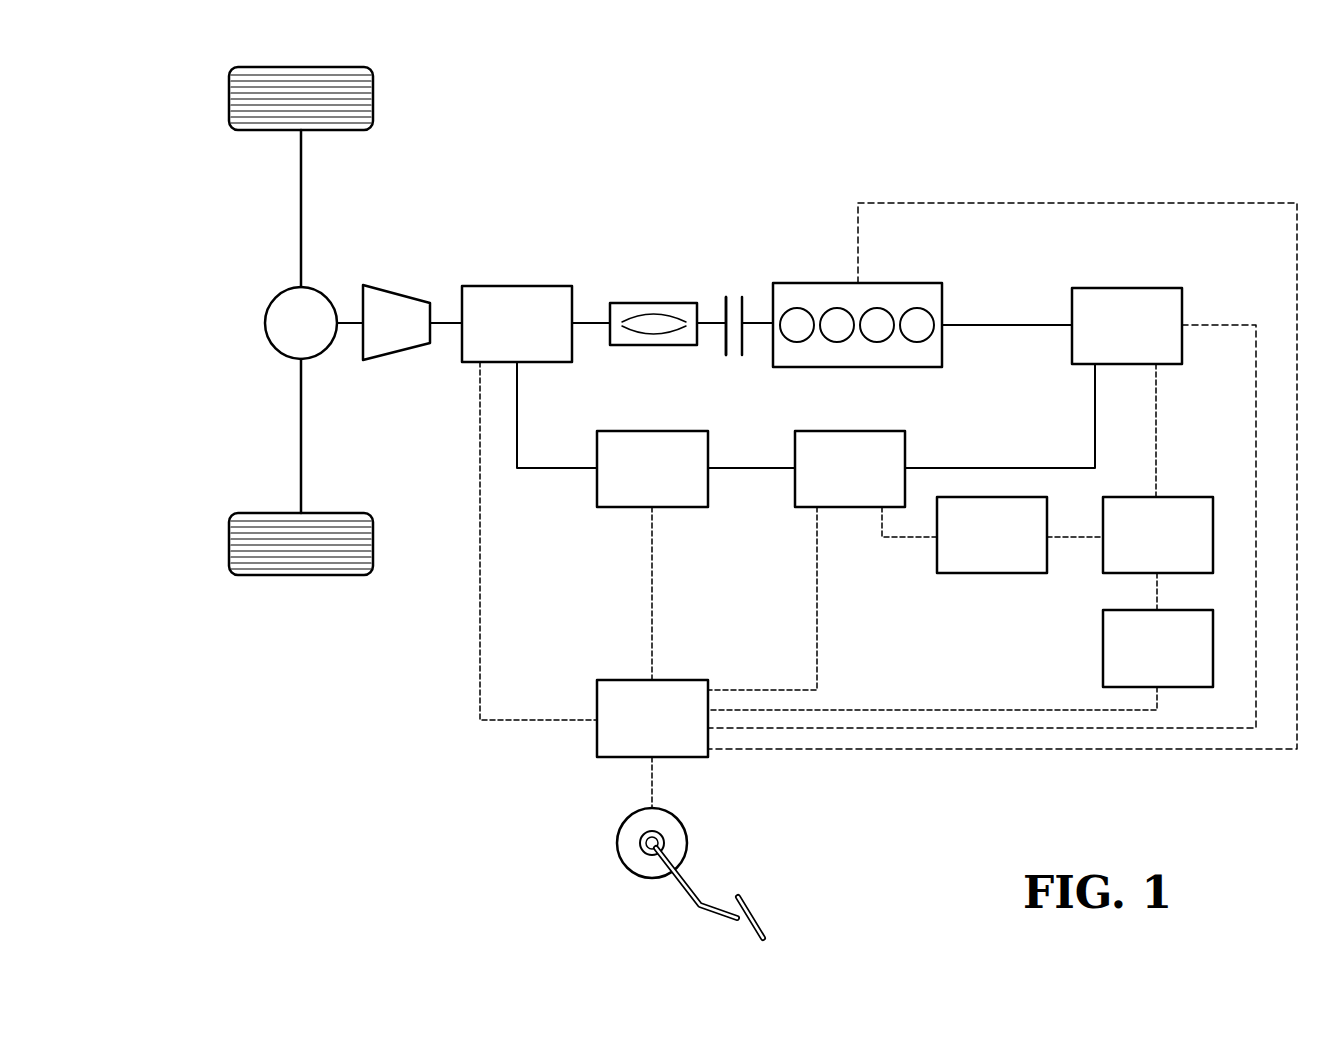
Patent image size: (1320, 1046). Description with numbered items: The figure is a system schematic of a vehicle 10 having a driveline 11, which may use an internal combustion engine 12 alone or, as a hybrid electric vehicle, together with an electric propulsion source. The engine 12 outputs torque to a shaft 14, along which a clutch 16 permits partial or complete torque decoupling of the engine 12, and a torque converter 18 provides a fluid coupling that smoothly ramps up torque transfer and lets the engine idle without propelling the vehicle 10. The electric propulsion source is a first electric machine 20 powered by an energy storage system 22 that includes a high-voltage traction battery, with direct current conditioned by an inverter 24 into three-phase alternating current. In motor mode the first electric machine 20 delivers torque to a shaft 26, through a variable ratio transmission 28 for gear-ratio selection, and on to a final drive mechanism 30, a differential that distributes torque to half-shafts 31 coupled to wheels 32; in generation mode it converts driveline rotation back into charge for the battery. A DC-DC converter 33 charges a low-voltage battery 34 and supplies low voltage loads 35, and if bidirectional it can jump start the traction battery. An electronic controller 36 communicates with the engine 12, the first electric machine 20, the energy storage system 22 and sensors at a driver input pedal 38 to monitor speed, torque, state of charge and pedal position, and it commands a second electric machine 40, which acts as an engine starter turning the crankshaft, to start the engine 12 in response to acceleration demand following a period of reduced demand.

The vehicle 10 is at (160, 222).
The driveline 11 is at (592, 258).
The internal combustion engine 12 is at (820, 283).
The shaft 14 is at (757, 318).
The clutch 16 is at (725, 348).
The torque converter 18 is at (657, 303).
The first electric machine 20 is at (534, 286).
The energy storage system 22 is at (850, 431).
The inverter 24 is at (652, 431).
The shaft 26 is at (444, 322).
The variable ratio transmission 28 is at (396, 285).
The final drive mechanism 30 is at (265, 325).
The half-shafts 31 is at (300, 213).
The wheels 32 is at (229, 100).
The DC-DC converter 33 is at (996, 573).
The low-voltage battery 34 is at (1195, 497).
The low voltage loads 35 is at (1103, 642).
The electronic controller 36 is at (630, 680).
The driver input pedal 38 is at (690, 895).
The second electric machine 40 is at (1120, 288).